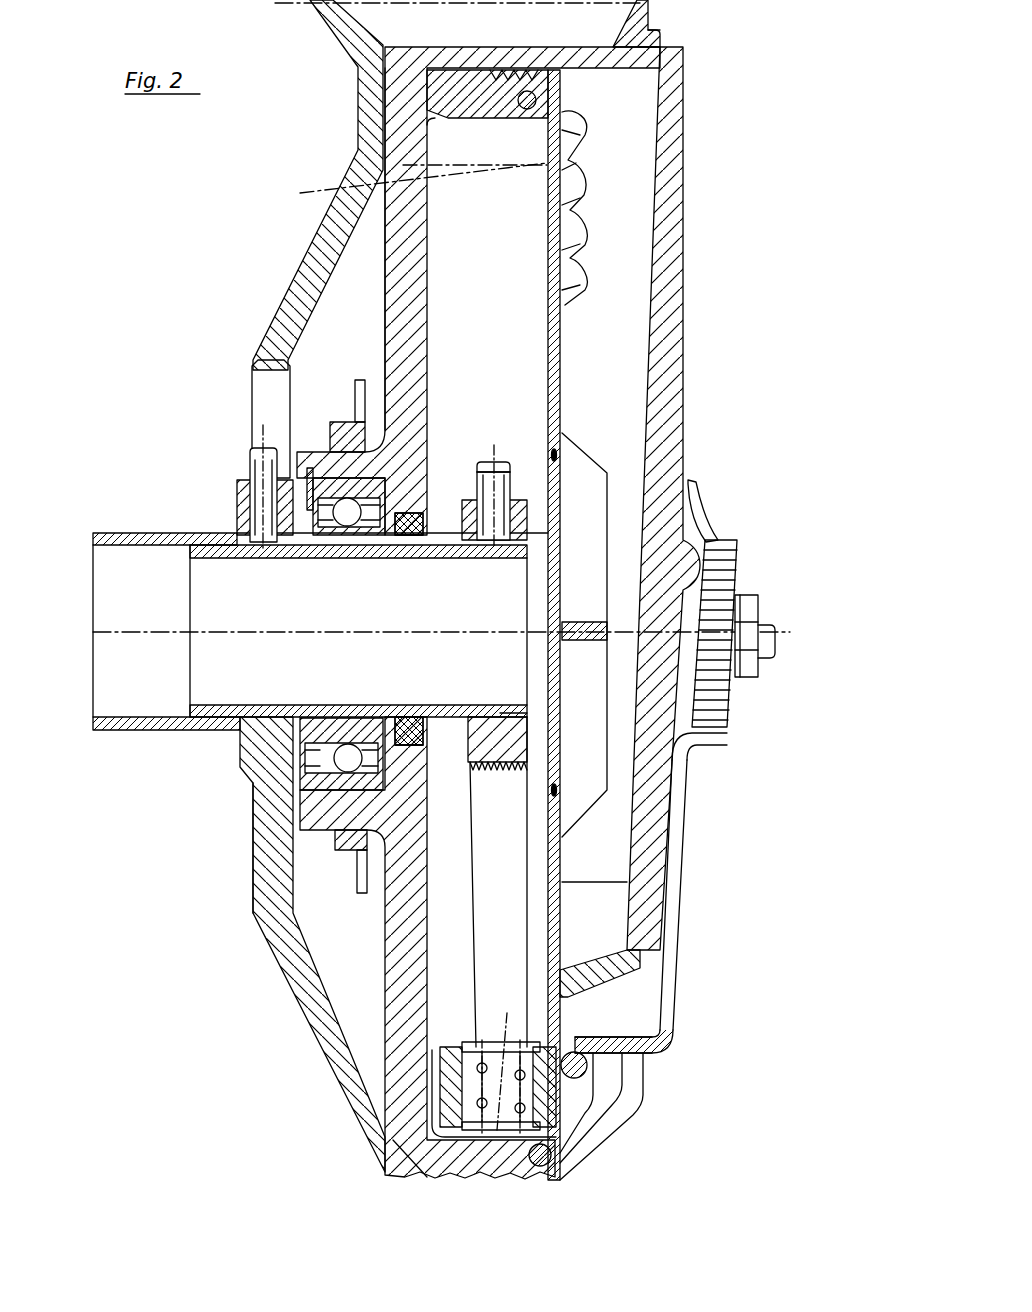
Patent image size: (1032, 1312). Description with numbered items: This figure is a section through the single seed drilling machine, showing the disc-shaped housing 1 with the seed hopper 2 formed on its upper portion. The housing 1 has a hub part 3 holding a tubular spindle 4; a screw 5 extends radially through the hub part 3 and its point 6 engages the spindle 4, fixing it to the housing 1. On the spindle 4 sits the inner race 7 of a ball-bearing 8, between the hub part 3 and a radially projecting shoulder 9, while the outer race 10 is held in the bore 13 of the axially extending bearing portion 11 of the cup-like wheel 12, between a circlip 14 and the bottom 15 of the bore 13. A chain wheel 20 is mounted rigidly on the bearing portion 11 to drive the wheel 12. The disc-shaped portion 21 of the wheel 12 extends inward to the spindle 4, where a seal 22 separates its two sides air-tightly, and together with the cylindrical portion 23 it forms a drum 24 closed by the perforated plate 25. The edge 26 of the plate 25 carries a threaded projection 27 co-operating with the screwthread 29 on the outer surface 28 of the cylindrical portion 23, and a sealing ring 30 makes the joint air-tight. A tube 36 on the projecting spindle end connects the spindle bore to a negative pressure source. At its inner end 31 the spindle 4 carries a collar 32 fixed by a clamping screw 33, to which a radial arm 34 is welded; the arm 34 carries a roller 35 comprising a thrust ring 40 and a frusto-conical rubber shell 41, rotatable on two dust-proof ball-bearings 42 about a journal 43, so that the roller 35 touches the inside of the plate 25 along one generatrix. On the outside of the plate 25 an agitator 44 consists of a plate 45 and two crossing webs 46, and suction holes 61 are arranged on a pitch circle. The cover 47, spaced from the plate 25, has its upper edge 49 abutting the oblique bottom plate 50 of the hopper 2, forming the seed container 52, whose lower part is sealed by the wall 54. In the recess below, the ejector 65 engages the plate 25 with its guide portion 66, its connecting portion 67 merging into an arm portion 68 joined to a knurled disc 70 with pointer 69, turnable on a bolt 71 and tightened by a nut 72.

The housing 1 is at (307, 268).
The seed hopper 2 is at (600, 15).
The hub part 3 is at (307, 727).
The tubular spindle 4 is at (333, 743).
The screw 5 is at (257, 467).
The point 6 is at (237, 533).
The inner race 7 is at (310, 530).
The ball-bearing 8 is at (260, 893).
The shoulder 9 is at (373, 745).
The outer race 10 is at (260, 843).
The bearing portion 11 is at (333, 458).
The flanged wheel 12 is at (385, 313).
The bore 13 is at (310, 480).
The circlip 14 is at (423, 778).
The bottom 15 is at (390, 780).
The chain wheel 20 is at (360, 398).
The disc-shaped portion 21 is at (408, 248).
The seal 22 is at (500, 735).
The cylindrical portion 23 is at (463, 100).
The drum 24 is at (468, 121).
The perforated plate 25 is at (555, 913).
The edge 26 is at (560, 1165).
The threaded projection 27 is at (560, 1177).
The outer surface 28 is at (377, 1153).
The screwthread 29 is at (488, 1177).
The sealing ring 30 is at (560, 1150).
The inner end 31 is at (497, 713).
The collar 32 is at (400, 747).
The clamping screw 33 is at (512, 476).
The arm 34 is at (515, 948).
The roller 35 is at (557, 1113).
The tube 36 is at (130, 732).
The thrust ring 40 is at (460, 1090).
The rubber shell 41 is at (460, 1080).
The dust-proof ball-bearings 42 is at (460, 1070).
The journal 43 is at (510, 1088).
The agitator 44 is at (590, 453).
The plate 45 is at (557, 455).
The webs 46 is at (577, 467).
The cover 47 is at (675, 272).
The upper edge 49 is at (660, 57).
The bottom plate 50 is at (605, 62).
The seed container 52 is at (613, 308).
The wall 54 is at (597, 970).
The suction holes 61 is at (406, 186).
The ejector 65 is at (674, 1002).
The guide portion 66 is at (587, 1070).
The connecting portion 67 is at (657, 1052).
The arm portion 68 is at (672, 850).
The pointer 69 is at (690, 500).
The knurled disc 70 is at (737, 543).
The bolt 71 is at (763, 637).
The nut 72 is at (747, 603).